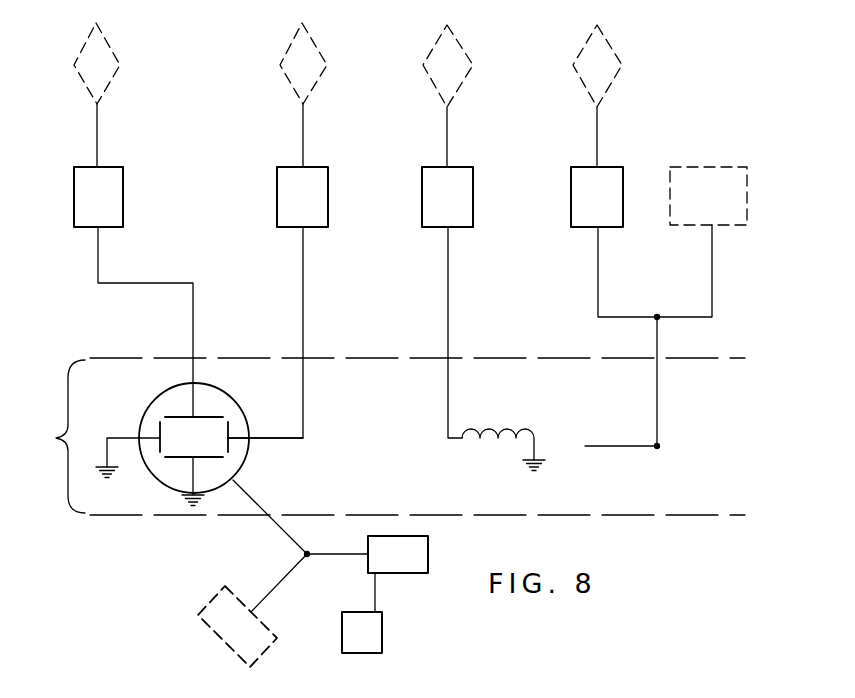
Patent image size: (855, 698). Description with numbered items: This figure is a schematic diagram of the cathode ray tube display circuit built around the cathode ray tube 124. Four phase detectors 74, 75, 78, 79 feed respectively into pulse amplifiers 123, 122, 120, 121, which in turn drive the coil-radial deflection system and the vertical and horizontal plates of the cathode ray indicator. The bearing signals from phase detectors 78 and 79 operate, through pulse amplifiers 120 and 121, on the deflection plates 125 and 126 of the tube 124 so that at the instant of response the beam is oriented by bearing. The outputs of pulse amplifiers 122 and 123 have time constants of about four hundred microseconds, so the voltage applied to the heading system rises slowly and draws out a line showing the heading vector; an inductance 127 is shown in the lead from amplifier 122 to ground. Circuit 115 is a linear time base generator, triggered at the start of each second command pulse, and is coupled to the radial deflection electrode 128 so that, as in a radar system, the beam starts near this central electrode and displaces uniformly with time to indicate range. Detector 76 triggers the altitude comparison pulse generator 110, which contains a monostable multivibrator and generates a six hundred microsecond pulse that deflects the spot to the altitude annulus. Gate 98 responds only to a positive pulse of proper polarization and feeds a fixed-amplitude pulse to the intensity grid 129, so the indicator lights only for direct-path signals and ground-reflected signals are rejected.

The phase detector 74 is at (608, 46).
The phase detector 75 is at (458, 46).
The phase detector 78 is at (107, 43).
The phase detector 79 is at (290, 46).
The pulse amplifier 120 is at (123, 199).
The pulse amplifier 121 is at (328, 200).
The pulse amplifier 122 is at (473, 206).
The pulse amplifier 123 is at (571, 215).
The linear time base generator 115 is at (708, 196).
The cathode ray tube 124 is at (49, 436).
The deflection plate 125 is at (213, 417).
The deflection plate 126 is at (240, 440).
The inductor 127 is at (488, 430).
The radial deflection electrode 128 is at (627, 445).
The intensity grid 129 is at (158, 399).
The altitude comparison pulse generator 110 is at (398, 554).
The detector 76 is at (362, 632).
The gate 98 is at (237, 626).